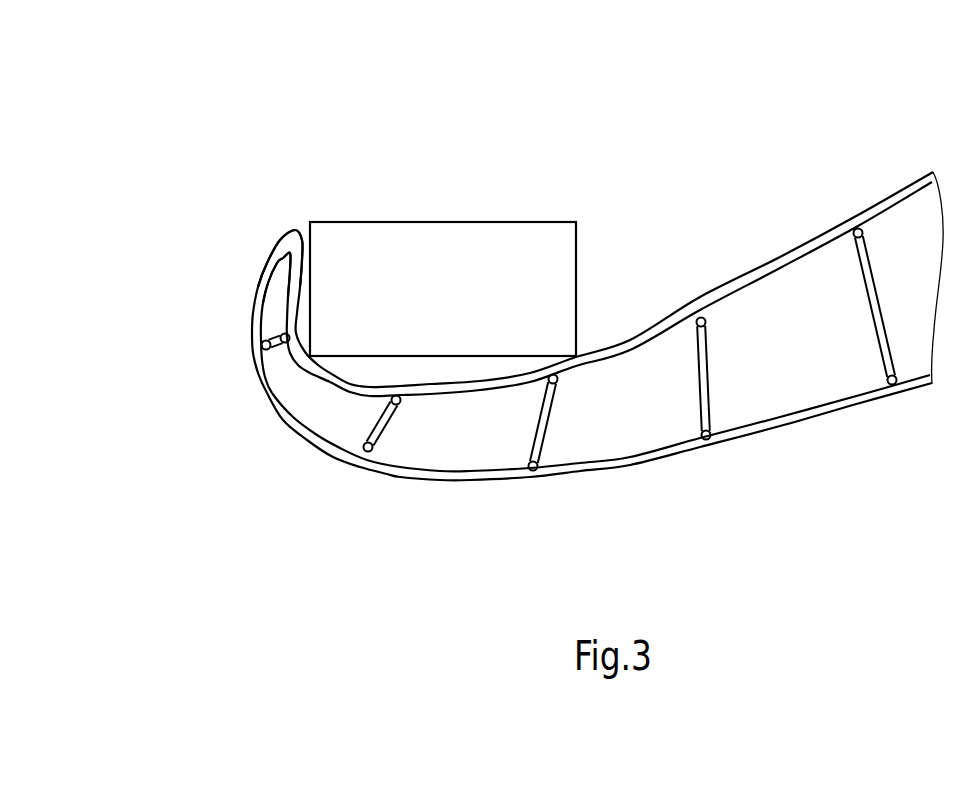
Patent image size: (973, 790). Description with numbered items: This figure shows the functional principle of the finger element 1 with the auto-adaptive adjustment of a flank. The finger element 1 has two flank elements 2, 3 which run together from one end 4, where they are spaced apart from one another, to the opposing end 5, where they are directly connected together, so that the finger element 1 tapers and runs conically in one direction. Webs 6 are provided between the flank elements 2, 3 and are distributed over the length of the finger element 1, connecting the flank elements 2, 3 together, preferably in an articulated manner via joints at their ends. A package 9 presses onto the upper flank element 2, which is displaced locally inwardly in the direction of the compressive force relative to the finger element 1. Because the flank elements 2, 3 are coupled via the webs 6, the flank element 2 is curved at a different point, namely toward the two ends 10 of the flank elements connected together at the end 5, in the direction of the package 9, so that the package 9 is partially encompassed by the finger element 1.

The finger element 1 is at (534, 343).
The upper flank element 2 is at (655, 332).
The flank element 3 is at (665, 453).
The end of the finger element 4 is at (925, 140).
The opposing end of the finger element 5 is at (292, 190).
The webs 6 is at (276, 348).
The package 9 is at (450, 237).
The ends of the flank elements connected together 10 is at (199, 305).